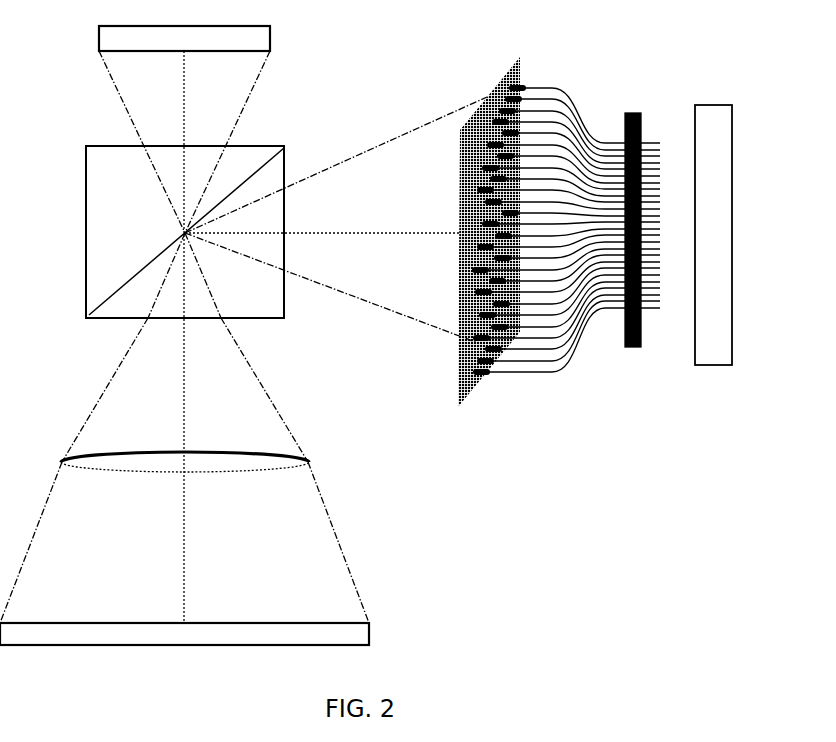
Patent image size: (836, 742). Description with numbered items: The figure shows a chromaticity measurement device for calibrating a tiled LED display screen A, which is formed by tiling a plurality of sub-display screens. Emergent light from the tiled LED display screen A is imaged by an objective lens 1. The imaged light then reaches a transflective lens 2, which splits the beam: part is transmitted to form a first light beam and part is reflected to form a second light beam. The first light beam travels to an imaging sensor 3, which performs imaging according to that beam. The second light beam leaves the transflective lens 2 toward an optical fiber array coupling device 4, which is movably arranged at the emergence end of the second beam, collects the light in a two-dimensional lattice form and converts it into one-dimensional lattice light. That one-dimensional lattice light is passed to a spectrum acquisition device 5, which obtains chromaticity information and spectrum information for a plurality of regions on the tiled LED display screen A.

The objective lens 1 is at (220, 419).
The transflective lens 2 is at (142, 245).
The imaging sensor 3 is at (143, 73).
The optical fiber array coupling device 4 is at (559, 243).
The spectrum acquisition device 5 is at (738, 261).
The tiled LED display screen A is at (221, 589).